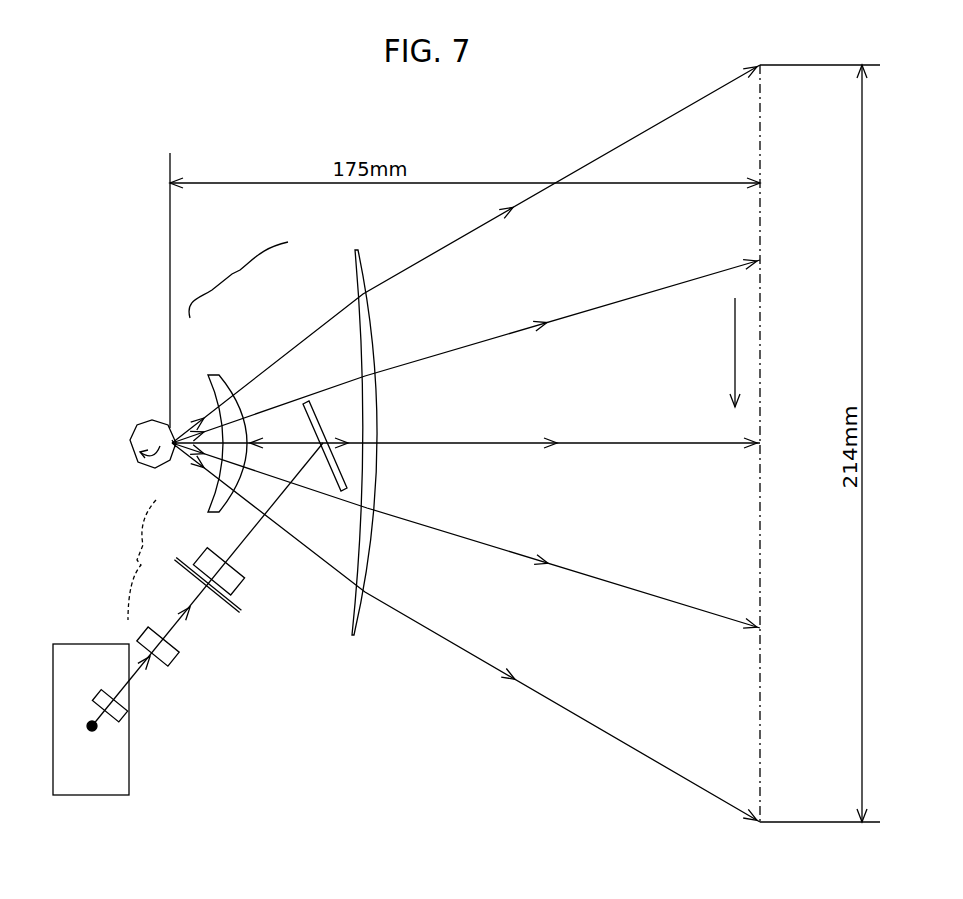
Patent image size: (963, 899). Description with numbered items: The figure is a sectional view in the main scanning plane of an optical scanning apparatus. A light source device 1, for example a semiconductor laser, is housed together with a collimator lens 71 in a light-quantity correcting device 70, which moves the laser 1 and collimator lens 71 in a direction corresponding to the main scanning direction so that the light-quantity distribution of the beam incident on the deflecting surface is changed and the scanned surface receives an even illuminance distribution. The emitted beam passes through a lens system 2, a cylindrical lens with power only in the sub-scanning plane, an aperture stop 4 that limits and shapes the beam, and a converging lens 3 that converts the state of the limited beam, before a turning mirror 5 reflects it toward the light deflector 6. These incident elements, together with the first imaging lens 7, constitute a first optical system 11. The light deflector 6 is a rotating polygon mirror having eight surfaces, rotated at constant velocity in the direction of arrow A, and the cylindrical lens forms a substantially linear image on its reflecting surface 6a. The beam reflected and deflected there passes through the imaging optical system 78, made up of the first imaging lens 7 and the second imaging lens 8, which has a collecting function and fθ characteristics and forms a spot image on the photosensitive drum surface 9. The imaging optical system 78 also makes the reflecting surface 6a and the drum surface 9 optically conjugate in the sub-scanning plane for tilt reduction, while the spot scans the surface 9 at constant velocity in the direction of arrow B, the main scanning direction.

The light source device 1 is at (92, 735).
The lens system 2 is at (179, 662).
The converging lens 3 is at (240, 584).
The aperture stop 4 is at (218, 603).
The turning mirror 5 is at (332, 480).
The light deflector 6 is at (157, 422).
The reflecting surface 6a is at (177, 463).
The first imaging lens 7 is at (214, 376).
The second imaging lens 8 is at (357, 274).
The imaging optical system 78 is at (238, 280).
The photosensitive drum surface 9 is at (761, 340).
The first optical system 11 is at (127, 560).
The light-quantity correcting device 70 is at (80, 644).
The collimator lens 71 is at (118, 713).
The rotation direction of rotating polygon mirror A is at (145, 472).
The main scanning direction B is at (735, 366).